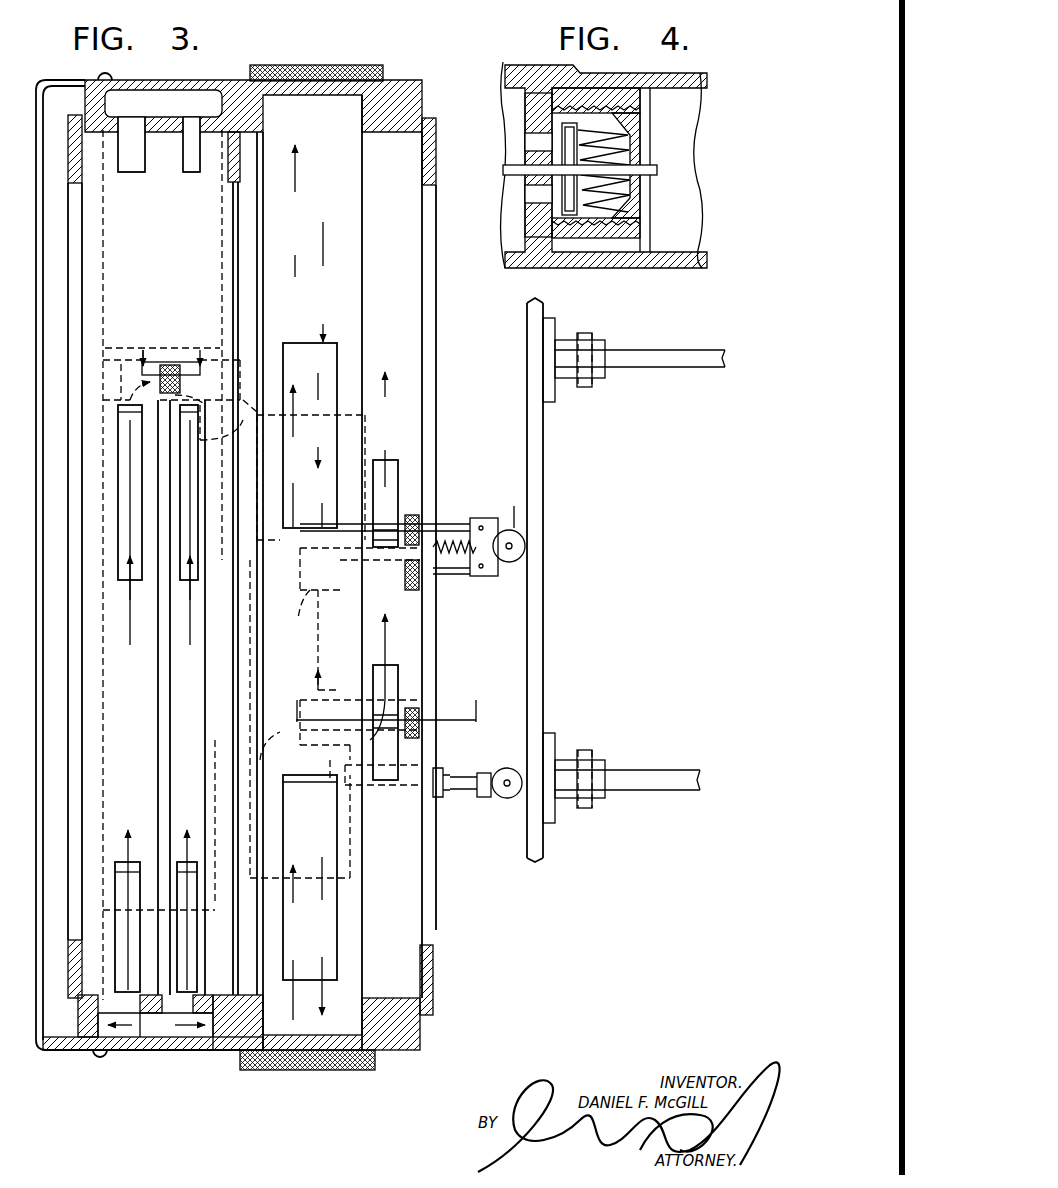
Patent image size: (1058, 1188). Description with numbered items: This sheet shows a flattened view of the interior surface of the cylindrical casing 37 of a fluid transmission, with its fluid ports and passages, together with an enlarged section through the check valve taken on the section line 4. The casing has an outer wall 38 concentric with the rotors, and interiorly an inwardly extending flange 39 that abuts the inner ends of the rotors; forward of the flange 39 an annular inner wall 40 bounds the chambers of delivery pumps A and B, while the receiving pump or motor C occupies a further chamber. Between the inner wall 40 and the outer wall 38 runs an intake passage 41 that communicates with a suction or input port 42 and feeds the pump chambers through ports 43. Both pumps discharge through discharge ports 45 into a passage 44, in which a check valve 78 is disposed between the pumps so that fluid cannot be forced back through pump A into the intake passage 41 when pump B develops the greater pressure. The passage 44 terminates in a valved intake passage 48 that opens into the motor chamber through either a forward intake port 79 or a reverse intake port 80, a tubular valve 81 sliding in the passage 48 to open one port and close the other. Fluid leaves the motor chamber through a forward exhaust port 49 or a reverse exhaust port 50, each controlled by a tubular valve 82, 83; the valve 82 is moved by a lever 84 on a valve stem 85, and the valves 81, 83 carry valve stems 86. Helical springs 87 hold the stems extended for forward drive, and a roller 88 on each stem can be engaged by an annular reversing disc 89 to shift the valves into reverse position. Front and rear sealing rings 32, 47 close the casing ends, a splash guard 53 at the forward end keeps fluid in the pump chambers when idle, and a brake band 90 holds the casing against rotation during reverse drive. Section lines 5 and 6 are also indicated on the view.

In FIG. 3, the front sealing ring 32 is at (68, 950).
In FIG. 3, the cylindrical casing 37 is at (233, 81).
In FIG. 3, the outer wall 38 is at (157, 86).
In FIG. 3, the inwardly extending flange 39 is at (230, 178).
In FIG. 3, the annular inner wall 40 is at (146, 1030).
In FIG. 3, the intake passage 41 is at (152, 100).
In FIG. 3, the suction or input port 42 is at (96, 1030).
In FIG. 3, the ports 43 is at (191, 130).
In FIG. 3, the passage 44 is at (121, 360).
In FIG. 4, the passage 44 is at (686, 196).
In FIG. 3, the discharge ports 45 is at (157, 698).
In FIG. 3, the rear sealing ring 47 is at (434, 984).
In FIG. 3, the valved intake passage 48 is at (173, 360).
In FIG. 4, the valved intake passage 48 is at (617, 139).
In FIG. 3, the forward exhaust port 49 is at (393, 693).
In FIG. 3, the reverse exhaust port 50 is at (393, 483).
In FIG. 3, the splash guard 53 is at (44, 1051).
In FIG. 4, the check valve 78 is at (563, 145).
In FIG. 3, the forward intake port 79 is at (292, 546).
In FIG. 3, the reverse intake port 80 is at (328, 590).
In FIG. 3, the tubular valve 81 is at (306, 590).
In FIG. 3, the tubular valve 82 is at (340, 706).
In FIG. 3, the tubular valve 83 is at (393, 521).
In FIG. 3, the lever 84 is at (335, 753).
In FIG. 3, the valve stem 85 is at (467, 778).
In FIG. 3, the valve stems 86 is at (474, 528).
In FIG. 3, the helical springs 87 is at (450, 575).
In FIG. 3, the roller 88 is at (512, 563).
In FIG. 3, the annular reversing disc 89 is at (527, 654).
In FIG. 3, the brake band 90 is at (330, 1071).
In FIG. 3, the section line 4- 4 is at (168, 350).
In FIG. 3, the section line 5- 5 is at (386, 711).
In FIG. 3, the section line 6- 6 is at (322, 525).